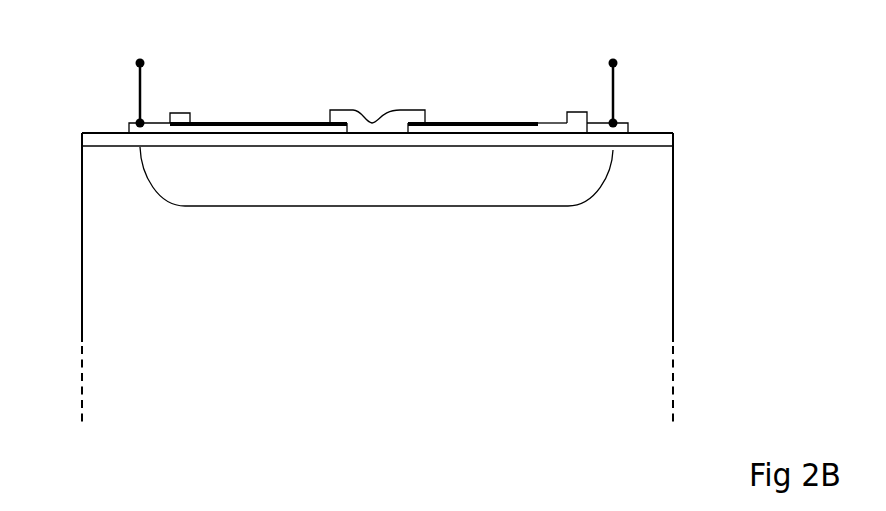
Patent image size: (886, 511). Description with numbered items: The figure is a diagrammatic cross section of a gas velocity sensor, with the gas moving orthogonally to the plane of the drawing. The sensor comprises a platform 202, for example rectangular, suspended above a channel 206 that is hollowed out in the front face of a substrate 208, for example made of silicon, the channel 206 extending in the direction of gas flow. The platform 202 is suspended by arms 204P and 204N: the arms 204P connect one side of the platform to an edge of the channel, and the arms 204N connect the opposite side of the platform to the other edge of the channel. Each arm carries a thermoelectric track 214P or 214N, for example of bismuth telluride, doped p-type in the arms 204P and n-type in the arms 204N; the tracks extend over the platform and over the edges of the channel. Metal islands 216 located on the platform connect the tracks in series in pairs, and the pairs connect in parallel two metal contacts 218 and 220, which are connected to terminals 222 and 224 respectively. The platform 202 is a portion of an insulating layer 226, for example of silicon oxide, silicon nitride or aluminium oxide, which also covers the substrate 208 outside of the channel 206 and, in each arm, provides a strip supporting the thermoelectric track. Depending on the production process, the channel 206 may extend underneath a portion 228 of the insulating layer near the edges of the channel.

The platform 202 is at (318, 153).
The arms 204P is at (312, 153).
The arms 204N is at (438, 153).
The channel 206 is at (482, 207).
The substrate 208 is at (648, 265).
The thermoelectric track 214P is at (276, 124).
The thermoelectric track 214N is at (453, 126).
The metal islands 216 is at (378, 126).
The metal contact 218 is at (174, 114).
The metal contact 220 is at (578, 112).
The terminal 222 is at (137, 63).
The terminal 224 is at (615, 61).
The insulating layer 226 is at (656, 134).
The portion of the insulating layer 228 is at (140, 153).